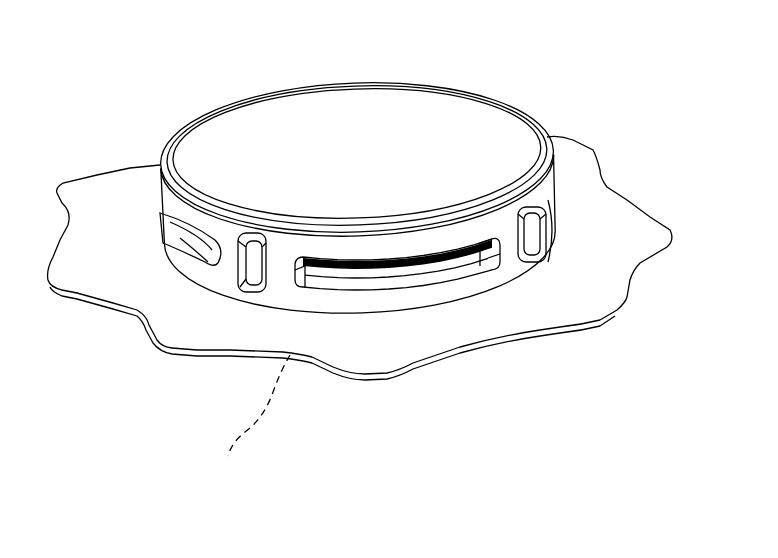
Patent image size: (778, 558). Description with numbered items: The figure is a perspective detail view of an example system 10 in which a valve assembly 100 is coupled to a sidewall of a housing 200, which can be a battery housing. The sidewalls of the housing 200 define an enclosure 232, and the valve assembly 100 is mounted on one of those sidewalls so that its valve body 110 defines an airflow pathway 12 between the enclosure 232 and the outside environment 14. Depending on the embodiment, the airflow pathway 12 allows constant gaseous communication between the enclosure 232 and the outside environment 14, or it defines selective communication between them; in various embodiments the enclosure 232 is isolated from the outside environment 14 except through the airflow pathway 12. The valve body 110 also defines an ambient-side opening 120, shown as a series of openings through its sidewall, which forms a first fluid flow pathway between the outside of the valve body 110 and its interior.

The system 10 is at (142, 85).
The airflow pathway 12 is at (366, 318).
The outside environment 14 is at (384, 48).
The valve assembly 100 is at (487, 58).
The valve body 110 is at (505, 135).
The ambient-side opening 120 is at (450, 278).
The housing 200 is at (614, 146).
The enclosure 232 is at (83, 320).